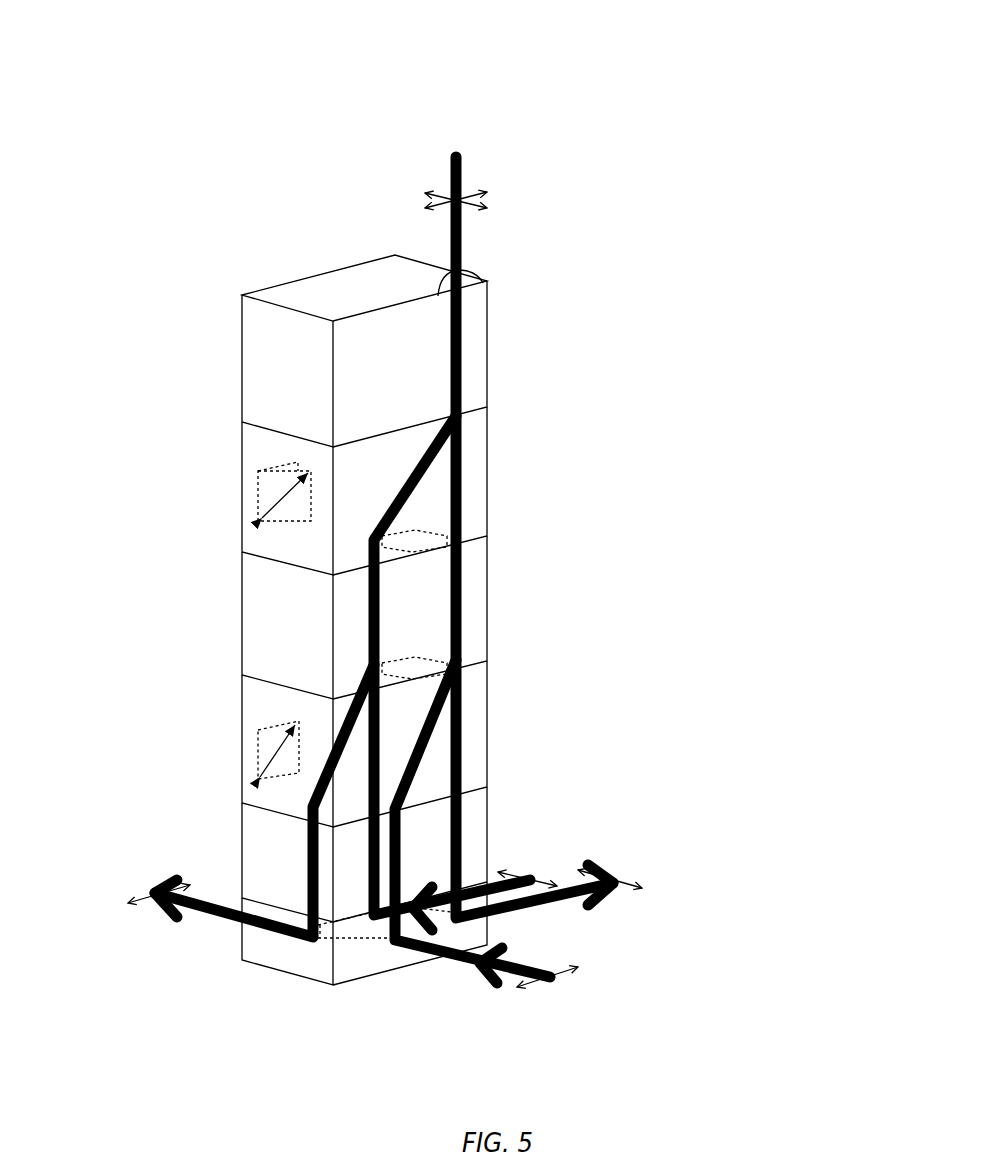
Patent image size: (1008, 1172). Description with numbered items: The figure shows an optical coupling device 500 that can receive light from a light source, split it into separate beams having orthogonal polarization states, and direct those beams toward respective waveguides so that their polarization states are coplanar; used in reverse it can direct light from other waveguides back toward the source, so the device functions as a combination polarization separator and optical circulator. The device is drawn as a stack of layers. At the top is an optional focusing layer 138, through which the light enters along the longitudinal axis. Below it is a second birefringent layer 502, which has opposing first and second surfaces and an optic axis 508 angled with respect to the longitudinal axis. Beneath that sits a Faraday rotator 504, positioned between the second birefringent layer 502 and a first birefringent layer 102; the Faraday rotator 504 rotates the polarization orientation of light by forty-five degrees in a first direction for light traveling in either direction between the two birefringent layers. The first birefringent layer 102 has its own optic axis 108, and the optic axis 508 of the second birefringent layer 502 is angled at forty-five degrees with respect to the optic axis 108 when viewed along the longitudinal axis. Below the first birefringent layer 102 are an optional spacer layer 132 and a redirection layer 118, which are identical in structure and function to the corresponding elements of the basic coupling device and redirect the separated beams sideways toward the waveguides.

The optical coupling device 500 is at (226, 72).
The focusing layer 138 is at (487, 333).
The second birefringent layer 502 is at (487, 470).
The Faraday rotator 504 is at (487, 600).
The first birefringent layer 102 is at (487, 725).
The spacer layer 132 is at (487, 825).
The redirection layer 118 is at (320, 983).
The optic axis 508 is at (283, 495).
The optic axis 108 is at (281, 748).